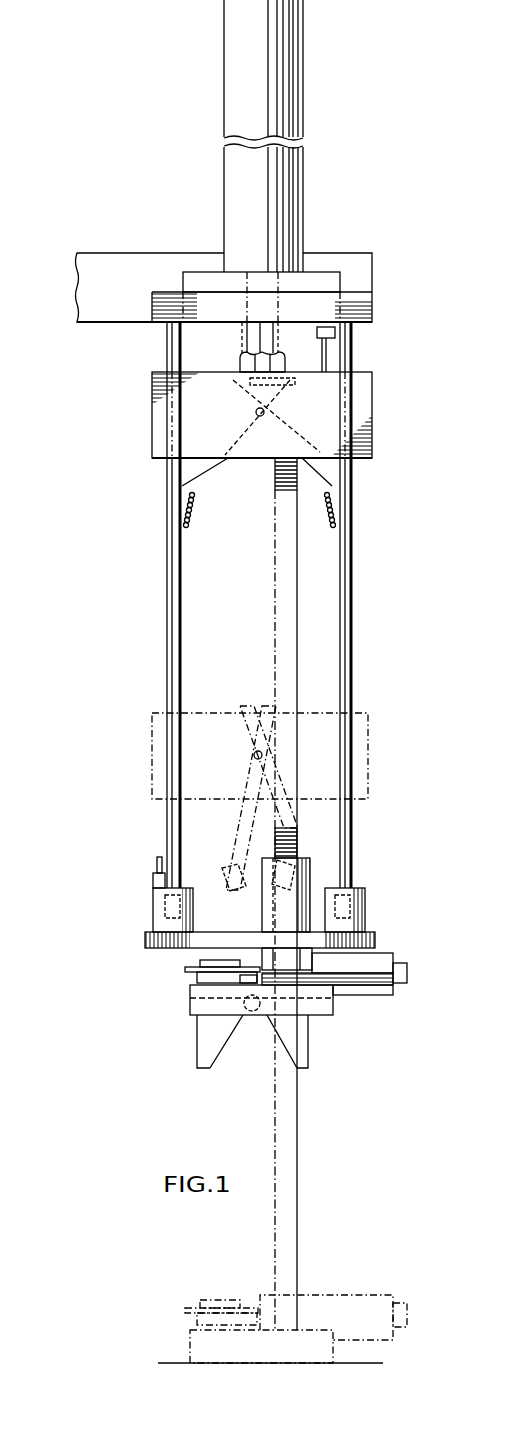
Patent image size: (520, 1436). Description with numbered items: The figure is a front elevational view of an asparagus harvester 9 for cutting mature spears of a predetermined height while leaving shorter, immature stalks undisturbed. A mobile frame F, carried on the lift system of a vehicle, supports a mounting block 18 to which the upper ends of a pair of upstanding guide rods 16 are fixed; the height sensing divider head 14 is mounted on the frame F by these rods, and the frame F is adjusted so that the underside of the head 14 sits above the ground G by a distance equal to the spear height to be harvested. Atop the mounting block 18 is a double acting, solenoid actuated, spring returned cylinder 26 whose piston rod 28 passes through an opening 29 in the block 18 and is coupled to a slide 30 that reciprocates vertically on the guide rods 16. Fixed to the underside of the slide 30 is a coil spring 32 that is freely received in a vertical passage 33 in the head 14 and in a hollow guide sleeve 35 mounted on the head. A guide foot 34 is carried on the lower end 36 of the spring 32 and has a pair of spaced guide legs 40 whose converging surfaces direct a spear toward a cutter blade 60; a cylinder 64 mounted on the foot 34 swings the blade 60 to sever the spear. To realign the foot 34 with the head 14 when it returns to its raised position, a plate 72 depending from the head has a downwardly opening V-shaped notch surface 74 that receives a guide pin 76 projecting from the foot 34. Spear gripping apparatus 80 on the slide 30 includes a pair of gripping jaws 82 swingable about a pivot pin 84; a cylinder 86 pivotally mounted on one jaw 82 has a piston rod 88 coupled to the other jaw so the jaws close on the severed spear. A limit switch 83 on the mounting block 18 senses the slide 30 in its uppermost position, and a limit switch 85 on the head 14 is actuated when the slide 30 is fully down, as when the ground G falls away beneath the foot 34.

The asparagus harvester 9 is at (72, 354).
The height sensing divider head 14 is at (143, 938).
The upstanding guide rods 16 is at (172, 586).
The mounting block 18 is at (372, 306).
The cylinder 26 is at (302, 51).
The piston rod 28 is at (252, 334).
The opening 29 is at (285, 300).
The slide 30 is at (187, 402).
The coil spring 32 is at (278, 603).
The vertical passage 33 is at (272, 940).
The guide foot 34 is at (267, 1031).
The hollow guide sleeve 35 is at (308, 880).
The lower end of the spring 36 is at (305, 1005).
The guide legs 40 is at (200, 995).
The cutter blade 60 is at (190, 970).
The cylinder 64 is at (388, 948).
The plate 72 is at (200, 1021).
The V-shaped notch surface 74 is at (240, 1032).
The guide pin 76 is at (252, 1012).
The spear gripping apparatus 80 is at (199, 674).
The spear gripping jaws 82 is at (325, 497).
The limit switch 83 is at (336, 335).
The pivot pin 84 is at (268, 414).
The limit switch 85 is at (155, 882).
The cylinder 86 is at (312, 344).
The piston rod 88 is at (280, 393).
The mobile frame F is at (120, 268).
The ground G is at (178, 1362).